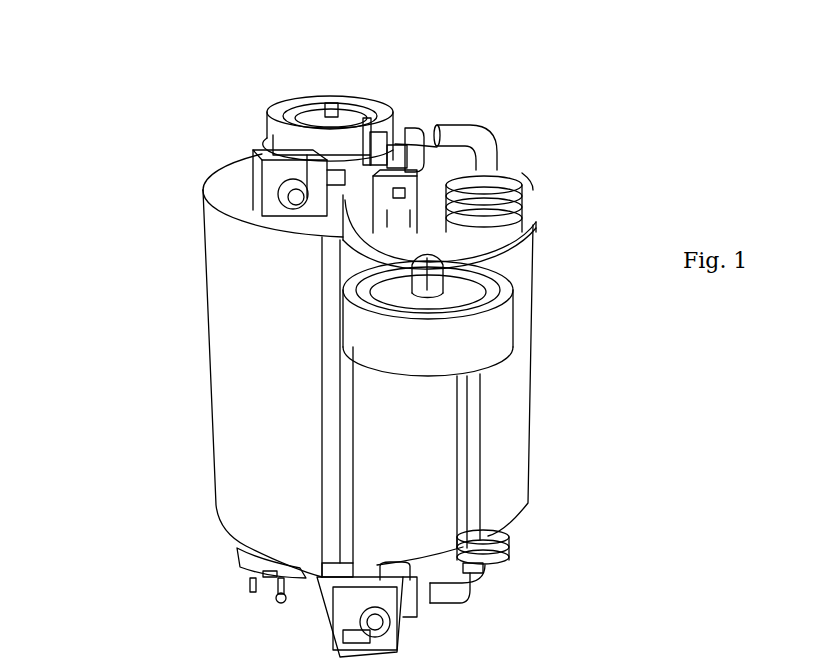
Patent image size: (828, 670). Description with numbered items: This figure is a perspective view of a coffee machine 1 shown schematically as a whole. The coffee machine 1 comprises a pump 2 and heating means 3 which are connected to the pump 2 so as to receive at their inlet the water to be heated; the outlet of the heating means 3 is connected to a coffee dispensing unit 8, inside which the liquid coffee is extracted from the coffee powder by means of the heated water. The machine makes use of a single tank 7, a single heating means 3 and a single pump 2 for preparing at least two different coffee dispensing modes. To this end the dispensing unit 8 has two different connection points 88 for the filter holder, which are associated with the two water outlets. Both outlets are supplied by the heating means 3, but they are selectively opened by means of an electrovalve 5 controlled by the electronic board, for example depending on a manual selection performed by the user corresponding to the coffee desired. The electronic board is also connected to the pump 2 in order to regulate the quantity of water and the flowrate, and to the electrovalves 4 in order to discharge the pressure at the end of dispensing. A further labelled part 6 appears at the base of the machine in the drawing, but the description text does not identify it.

The coffee machine 1 is at (594, 106).
The pump 2 is at (405, 627).
The heating means 3 is at (510, 550).
The electrovalves 4 is at (422, 132).
The electrovalve 5 is at (280, 170).
The mounting bracket 6 is at (240, 562).
The tank 7 is at (275, 343).
The coffee dispensing unit 8 is at (333, 74).
The connection points 88 is at (272, 112).